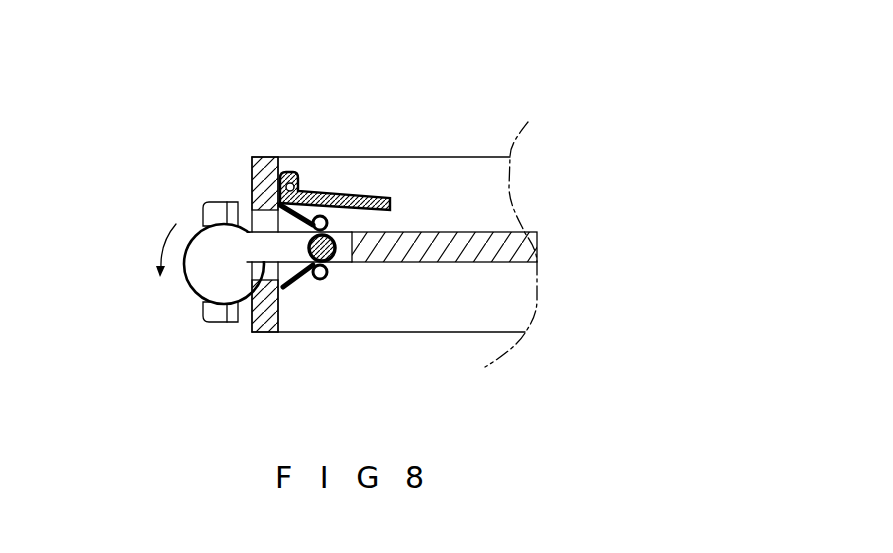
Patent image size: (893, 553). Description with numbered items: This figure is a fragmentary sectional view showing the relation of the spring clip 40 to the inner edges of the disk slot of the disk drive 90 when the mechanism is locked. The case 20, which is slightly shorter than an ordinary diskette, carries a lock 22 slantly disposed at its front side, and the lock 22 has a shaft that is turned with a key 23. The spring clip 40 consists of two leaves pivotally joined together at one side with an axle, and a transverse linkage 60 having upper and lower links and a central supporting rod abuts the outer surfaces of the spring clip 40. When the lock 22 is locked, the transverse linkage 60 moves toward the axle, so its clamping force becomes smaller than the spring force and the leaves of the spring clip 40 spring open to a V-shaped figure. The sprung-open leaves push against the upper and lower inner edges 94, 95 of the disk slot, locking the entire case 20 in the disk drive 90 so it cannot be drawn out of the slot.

The case 20 is at (417, 257).
The lock 22 is at (205, 277).
The key 23 is at (220, 208).
The spring clip 40 is at (312, 200).
The transverse linkage 60 is at (323, 216).
The disk drive 90 is at (435, 157).
The upper inner edge of the disk slot 94 is at (279, 160).
The lower inner edge of the disk slot 95 is at (278, 315).